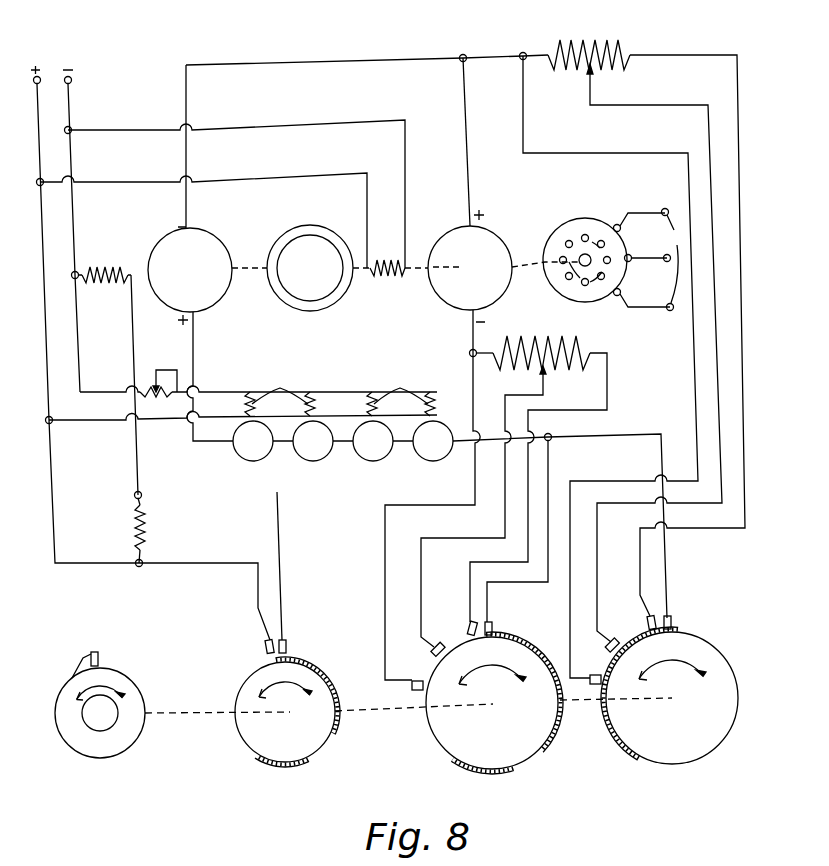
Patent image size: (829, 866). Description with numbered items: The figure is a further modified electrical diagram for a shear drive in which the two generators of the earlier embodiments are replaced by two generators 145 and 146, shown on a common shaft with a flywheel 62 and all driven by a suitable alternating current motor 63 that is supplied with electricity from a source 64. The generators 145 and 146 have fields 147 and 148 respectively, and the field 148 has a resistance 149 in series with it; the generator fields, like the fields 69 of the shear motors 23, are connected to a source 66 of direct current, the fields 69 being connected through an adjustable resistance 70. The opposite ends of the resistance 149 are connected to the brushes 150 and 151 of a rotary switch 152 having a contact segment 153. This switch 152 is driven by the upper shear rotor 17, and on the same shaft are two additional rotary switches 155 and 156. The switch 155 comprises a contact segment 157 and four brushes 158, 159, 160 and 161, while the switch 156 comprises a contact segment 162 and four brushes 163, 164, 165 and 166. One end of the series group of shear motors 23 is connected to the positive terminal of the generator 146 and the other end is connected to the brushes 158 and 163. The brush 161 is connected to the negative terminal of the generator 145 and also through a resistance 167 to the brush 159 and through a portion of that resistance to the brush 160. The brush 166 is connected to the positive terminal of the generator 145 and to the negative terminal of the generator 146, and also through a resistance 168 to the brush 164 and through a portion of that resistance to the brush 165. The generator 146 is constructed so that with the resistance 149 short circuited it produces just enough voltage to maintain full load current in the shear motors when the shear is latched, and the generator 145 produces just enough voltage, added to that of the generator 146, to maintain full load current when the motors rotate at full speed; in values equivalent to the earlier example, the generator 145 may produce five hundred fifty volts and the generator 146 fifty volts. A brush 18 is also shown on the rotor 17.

The source of direct current 66 is at (52, 66).
The field 148 is at (105, 284).
The generator 146 is at (200, 300).
The flywheel 62 is at (305, 236).
The field 147 is at (399, 276).
The generator 145 is at (490, 290).
The alternating current motor 63 is at (596, 206).
The source 64 is at (651, 260).
The resistance 168 is at (646, 333).
The resistance 167 is at (514, 481).
The adjustable resistance 70 is at (158, 375).
The fields 69 is at (401, 389).
The shear motors 23 is at (404, 453).
The resistance 149 is at (154, 530).
The brush 18 is at (99, 657).
The upper shear rotor 17 is at (100, 758).
The brush 151 is at (265, 651).
The brush 150 is at (288, 646).
The rotary switch 152 is at (285, 712).
The contact segment 153 is at (336, 734).
The brush 159 is at (467, 630).
The brush 158 is at (494, 627).
The brush 160 is at (433, 652).
The brush 161 is at (418, 692).
The rotary switch 155 is at (492, 703).
The contact segment 157 is at (543, 746).
The brush 164 is at (647, 628).
The brush 163 is at (676, 621).
The brush 165 is at (609, 649).
The brush 166 is at (596, 687).
The contact segment 162 is at (610, 737).
The rotary switch 156 is at (672, 698).